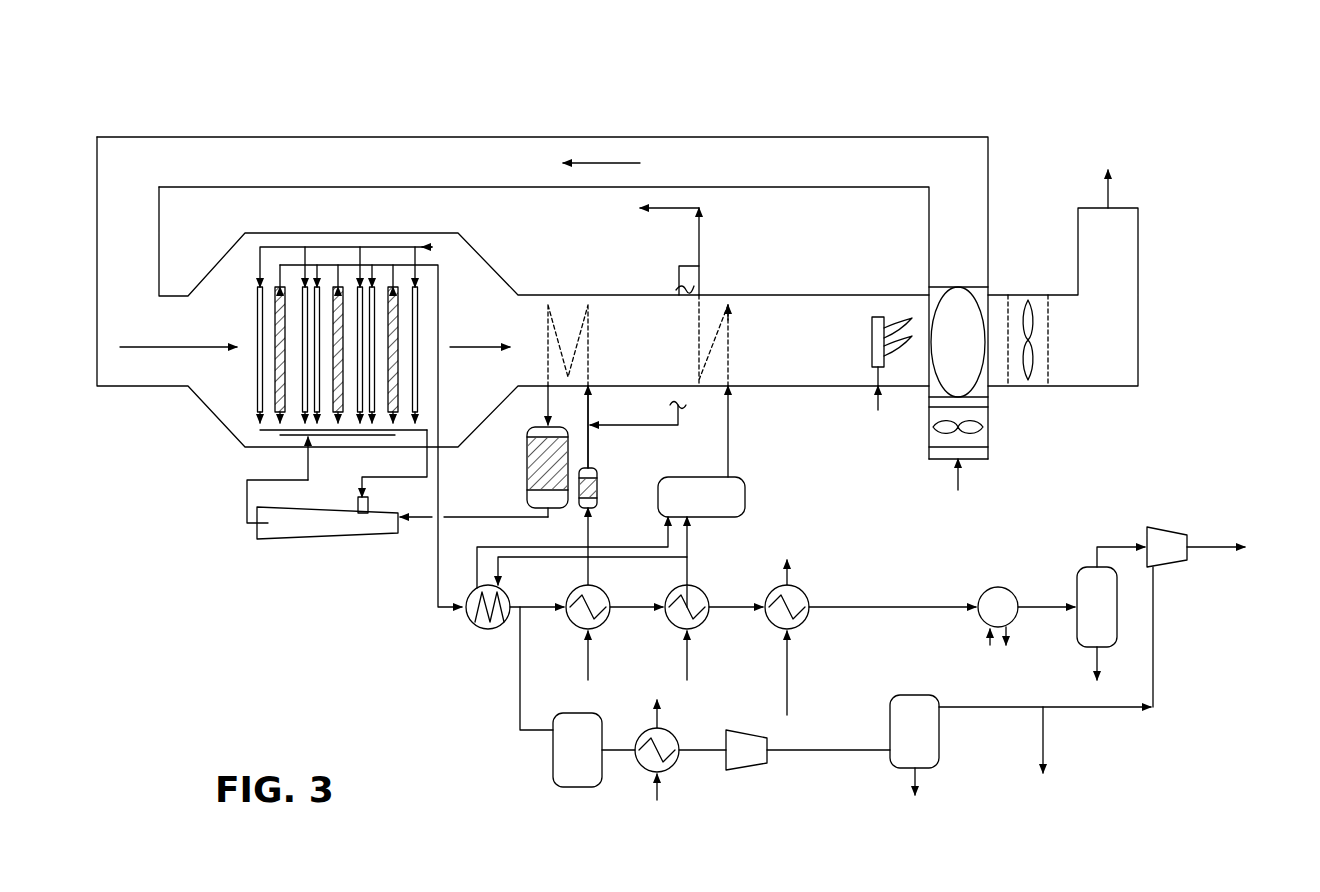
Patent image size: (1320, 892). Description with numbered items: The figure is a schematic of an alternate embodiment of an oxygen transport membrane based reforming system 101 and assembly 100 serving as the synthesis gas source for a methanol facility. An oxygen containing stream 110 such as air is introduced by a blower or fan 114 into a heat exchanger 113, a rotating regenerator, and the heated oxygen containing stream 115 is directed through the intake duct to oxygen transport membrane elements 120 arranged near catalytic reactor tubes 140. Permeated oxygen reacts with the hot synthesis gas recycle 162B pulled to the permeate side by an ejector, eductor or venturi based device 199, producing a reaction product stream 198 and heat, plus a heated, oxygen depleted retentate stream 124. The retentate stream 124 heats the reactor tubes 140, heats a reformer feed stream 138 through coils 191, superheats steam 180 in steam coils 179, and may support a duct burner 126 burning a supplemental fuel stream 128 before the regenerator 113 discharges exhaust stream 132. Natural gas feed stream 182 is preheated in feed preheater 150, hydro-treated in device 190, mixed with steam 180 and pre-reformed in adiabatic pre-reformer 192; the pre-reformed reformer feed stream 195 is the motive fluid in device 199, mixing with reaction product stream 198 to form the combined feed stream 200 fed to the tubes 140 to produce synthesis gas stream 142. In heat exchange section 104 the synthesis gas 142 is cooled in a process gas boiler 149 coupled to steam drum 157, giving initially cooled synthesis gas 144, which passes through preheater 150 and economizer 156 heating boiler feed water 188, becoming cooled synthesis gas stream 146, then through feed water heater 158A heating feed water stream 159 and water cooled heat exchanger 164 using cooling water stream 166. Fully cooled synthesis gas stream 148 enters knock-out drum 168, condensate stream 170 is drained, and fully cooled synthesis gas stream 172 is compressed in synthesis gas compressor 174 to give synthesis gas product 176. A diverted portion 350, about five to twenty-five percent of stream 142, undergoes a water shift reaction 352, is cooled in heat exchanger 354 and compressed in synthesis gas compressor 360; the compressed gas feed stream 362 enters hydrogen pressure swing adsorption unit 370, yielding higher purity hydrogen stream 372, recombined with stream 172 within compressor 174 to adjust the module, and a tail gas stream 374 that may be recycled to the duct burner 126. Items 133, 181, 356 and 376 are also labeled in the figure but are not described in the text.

The assembly 100 is at (283, 103).
The oxygen transport membrane based reforming system 101 is at (175, 455).
The heat exchange section 104 is at (432, 692).
The oxygen containing stream 110 is at (960, 483).
The heat exchanger 113 is at (968, 310).
The blower or fan 114 is at (983, 433).
The heated oxygen containing stream 115 is at (600, 163).
The oxygen transport membrane elements 120 is at (374, 322).
The heated retentate stream 124 is at (478, 350).
The duct burner 126 is at (872, 325).
The supplemental fuel stream 128 is at (877, 405).
The exhaust stream 132 is at (1110, 183).
The fan 133 is at (1038, 378).
The reformer feed stream 138 is at (590, 407).
The catalytic reactor tubes 140 is at (283, 290).
The synthesis gas stream 142 is at (438, 590).
The initially cooled synthesis gas stream 144 is at (548, 610).
The cooled synthesis gas stream 146 is at (725, 602).
The fully cooled synthesis gas stream 148 is at (1045, 610).
The process gas boiler 149 is at (480, 628).
The feed preheater 150 is at (600, 597).
The economizer 156 is at (700, 622).
The steam drum 157 is at (745, 495).
The feed water heater 158A is at (792, 592).
The feed water stream 159 is at (790, 660).
The hot synthesis gas recycle 162B is at (430, 247).
The water cooled heat exchanger 164 is at (1013, 588).
The cooling water stream 166 is at (985, 640).
The knock-out drum 168 is at (1110, 640).
The condensate stream 170 is at (1090, 660).
The fully cooled synthesis gas stream 172 is at (1110, 545).
The synthesis gas compressor 174 is at (1165, 565).
The synthesis gas product 176 is at (1225, 545).
The steam coils 179 is at (730, 348).
The superheated steam 180 is at (680, 285).
The signal line 181 is at (699, 230).
The hydrocarbon containing feed stream 182 is at (590, 648).
The boiler feed water 188 is at (690, 648).
The hydro-treating device 190 is at (597, 480).
The coils 191 is at (588, 350).
The adiabatic pre-reformer 192 is at (527, 470).
The pre-reformed reformer feed stream 195 is at (420, 520).
The reaction product stream 198 is at (427, 462).
The ejector, eductor or venturi based device 199 is at (315, 530).
The combined feed stream 200 is at (247, 505).
The diverted portion of cooled synthesis gas 350 is at (520, 683).
The water shift reaction 352 is at (550, 757).
The heat exchanger 354 is at (672, 765).
The coolant stream 356 is at (655, 790).
The synthesis gas compressor 360 is at (750, 730).
The compressed gas feed stream 362 is at (808, 750).
The hydrogen pressure swing adsorption unit 370 is at (905, 695).
The higher purity hydrogen stream 372 is at (975, 708).
The tail gas stream 374 is at (918, 775).
The outlet stream 376 is at (1045, 737).